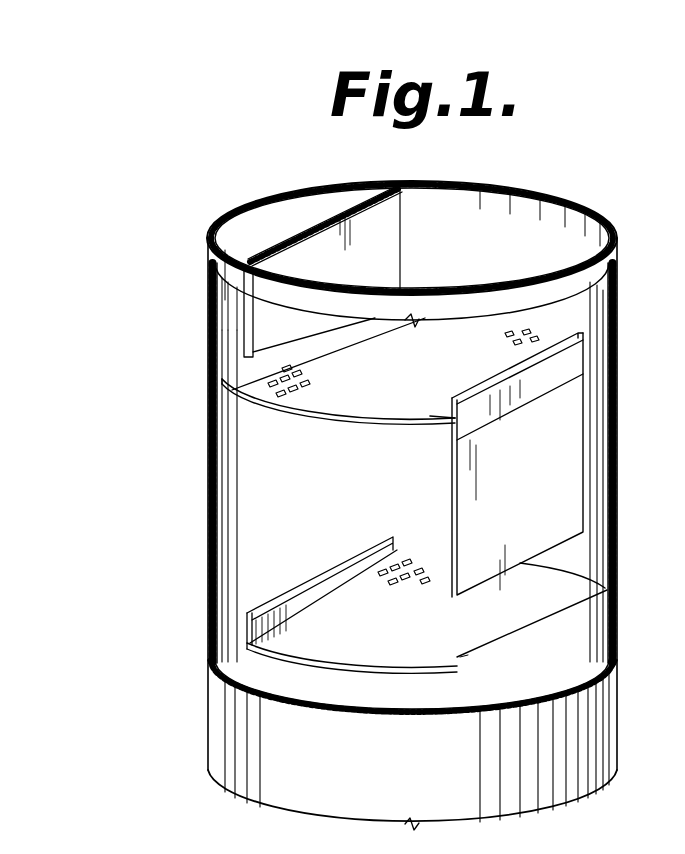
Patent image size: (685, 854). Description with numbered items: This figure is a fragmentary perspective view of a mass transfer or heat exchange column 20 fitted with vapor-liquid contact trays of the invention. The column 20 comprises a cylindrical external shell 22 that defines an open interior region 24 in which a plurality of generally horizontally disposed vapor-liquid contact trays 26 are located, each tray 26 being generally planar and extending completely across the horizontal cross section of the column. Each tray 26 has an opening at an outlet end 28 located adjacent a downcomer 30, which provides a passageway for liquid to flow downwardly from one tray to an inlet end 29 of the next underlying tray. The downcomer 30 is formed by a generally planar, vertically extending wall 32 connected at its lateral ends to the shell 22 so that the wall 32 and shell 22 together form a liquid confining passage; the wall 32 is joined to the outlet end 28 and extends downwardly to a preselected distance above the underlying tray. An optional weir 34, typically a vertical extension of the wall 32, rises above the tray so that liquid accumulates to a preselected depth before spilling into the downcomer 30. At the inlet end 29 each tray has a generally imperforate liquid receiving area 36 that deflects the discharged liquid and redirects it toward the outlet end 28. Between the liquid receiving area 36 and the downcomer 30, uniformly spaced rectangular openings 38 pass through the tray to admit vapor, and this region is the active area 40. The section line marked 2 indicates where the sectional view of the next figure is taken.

The top rim ring 20 is at (578, 194).
The cylindrical outer wall 22 is at (622, 463).
The interior chamber 24 is at (345, 509).
The shelf 26 is at (318, 420).
The front edge of shelf 28 is at (440, 417).
The inner wall surface 29 is at (230, 398).
The inner liner surface 30 is at (600, 421).
The divider panel 32 is at (532, 485).
The panel flange 34 is at (510, 382).
The lip 36 is at (318, 343).
The slots 38 is at (305, 385).
The shelf surface 40 is at (420, 384).
The section line of FIG. 2 is at (171, 388).